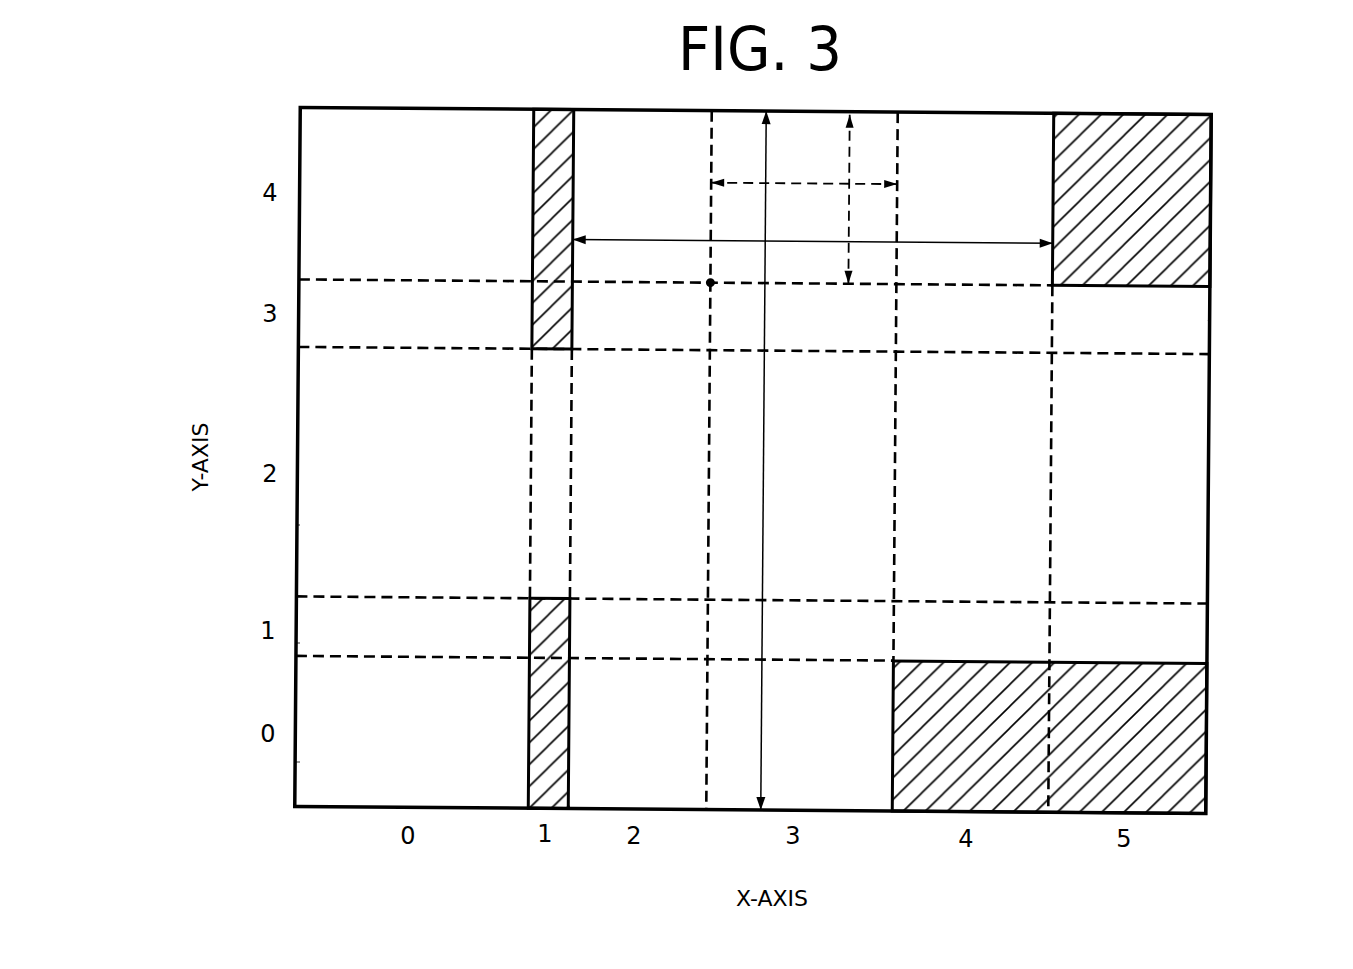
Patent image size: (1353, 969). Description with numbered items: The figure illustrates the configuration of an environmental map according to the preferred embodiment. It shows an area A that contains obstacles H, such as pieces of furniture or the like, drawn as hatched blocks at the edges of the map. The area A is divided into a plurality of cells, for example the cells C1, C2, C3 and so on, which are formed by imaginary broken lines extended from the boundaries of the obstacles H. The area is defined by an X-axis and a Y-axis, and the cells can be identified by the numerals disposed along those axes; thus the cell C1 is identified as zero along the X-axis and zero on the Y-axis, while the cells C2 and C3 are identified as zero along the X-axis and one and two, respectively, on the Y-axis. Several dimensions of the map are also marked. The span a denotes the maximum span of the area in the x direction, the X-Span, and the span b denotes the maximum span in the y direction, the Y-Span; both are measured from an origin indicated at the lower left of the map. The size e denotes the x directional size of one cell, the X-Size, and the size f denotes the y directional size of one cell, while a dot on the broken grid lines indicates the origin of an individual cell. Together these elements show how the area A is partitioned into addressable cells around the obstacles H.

The obstacle H is at (533, 163).
The area A is at (1266, 315).
The cell C1 is at (318, 760).
The cell C2 is at (310, 641).
The cell C3 is at (330, 523).
The maximum span in the x direction a is at (813, 227).
The maximum span in the y direction b is at (773, 460).
The x directional size of one cell e is at (792, 182).
The y directional size of one cell f is at (851, 217).